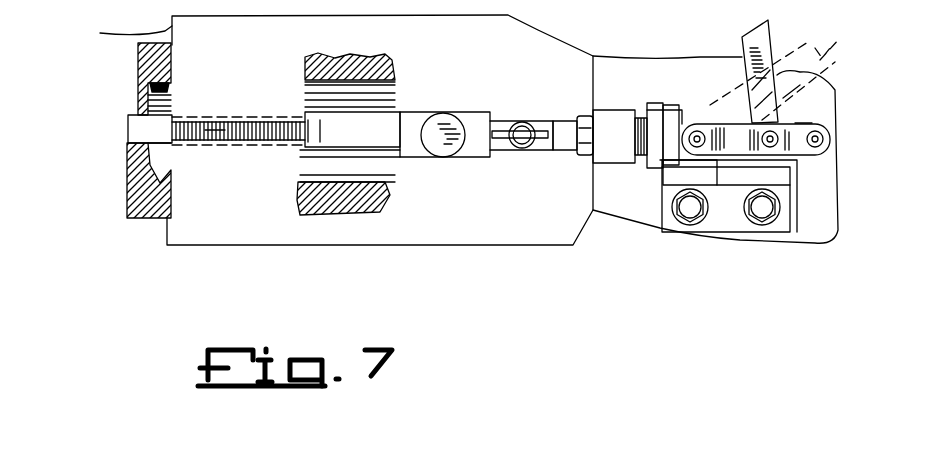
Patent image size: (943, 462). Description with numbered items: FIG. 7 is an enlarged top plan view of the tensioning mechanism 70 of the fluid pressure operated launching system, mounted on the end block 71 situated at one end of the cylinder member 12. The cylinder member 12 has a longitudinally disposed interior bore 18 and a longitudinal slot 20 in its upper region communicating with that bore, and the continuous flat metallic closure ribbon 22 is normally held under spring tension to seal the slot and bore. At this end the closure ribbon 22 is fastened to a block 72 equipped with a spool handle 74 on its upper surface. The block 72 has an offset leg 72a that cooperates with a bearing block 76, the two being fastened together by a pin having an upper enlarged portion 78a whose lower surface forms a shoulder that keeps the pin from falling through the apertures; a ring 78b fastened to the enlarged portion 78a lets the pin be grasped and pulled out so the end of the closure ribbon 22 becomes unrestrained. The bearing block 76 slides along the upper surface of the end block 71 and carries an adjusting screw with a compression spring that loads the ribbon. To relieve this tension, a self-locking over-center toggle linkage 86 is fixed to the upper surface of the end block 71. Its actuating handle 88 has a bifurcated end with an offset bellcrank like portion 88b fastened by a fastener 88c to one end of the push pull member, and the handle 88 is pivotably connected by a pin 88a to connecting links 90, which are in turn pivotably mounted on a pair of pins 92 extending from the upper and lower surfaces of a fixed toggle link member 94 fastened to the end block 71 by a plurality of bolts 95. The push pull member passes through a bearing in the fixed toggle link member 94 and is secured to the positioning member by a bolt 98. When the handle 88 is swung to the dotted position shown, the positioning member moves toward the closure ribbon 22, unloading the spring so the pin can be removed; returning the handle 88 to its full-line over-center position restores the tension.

The cylinder member 12 is at (137, 48).
The interior bore 18 is at (137, 100).
The longitudinal slot 20 is at (213, 134).
The closure ribbon 22 is at (128, 130).
The tensioning mechanism 70 is at (571, 265).
The end block 71 is at (635, 225).
The block 72 is at (415, 160).
The offset leg 72a is at (495, 121).
The spool handle 74 is at (445, 113).
The bearing block 76 is at (558, 120).
The upper enlarged portion 78a is at (518, 152).
The ring 78b is at (541, 155).
The toggle linkage 86 is at (732, 54).
The actuating handle 88 is at (770, 16).
The pin 88a is at (782, 73).
The offset bellcrank like portion 88b is at (797, 123).
The fastener 88c is at (790, 170).
The connecting links 90 is at (692, 150).
The pins 92 is at (697, 110).
The fixed toggle link member 94 is at (703, 112).
The bolts 95 is at (690, 224).
The bolt 98 is at (586, 160).